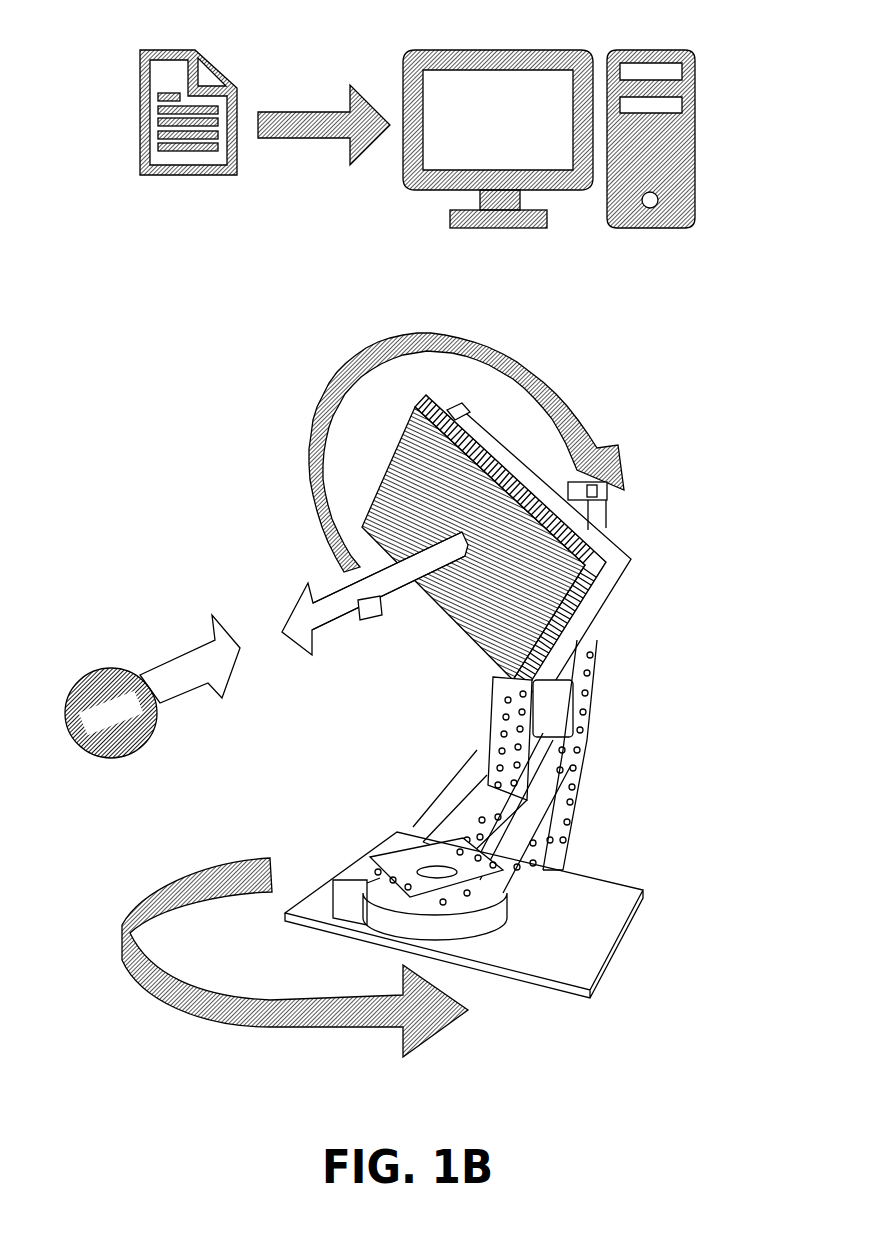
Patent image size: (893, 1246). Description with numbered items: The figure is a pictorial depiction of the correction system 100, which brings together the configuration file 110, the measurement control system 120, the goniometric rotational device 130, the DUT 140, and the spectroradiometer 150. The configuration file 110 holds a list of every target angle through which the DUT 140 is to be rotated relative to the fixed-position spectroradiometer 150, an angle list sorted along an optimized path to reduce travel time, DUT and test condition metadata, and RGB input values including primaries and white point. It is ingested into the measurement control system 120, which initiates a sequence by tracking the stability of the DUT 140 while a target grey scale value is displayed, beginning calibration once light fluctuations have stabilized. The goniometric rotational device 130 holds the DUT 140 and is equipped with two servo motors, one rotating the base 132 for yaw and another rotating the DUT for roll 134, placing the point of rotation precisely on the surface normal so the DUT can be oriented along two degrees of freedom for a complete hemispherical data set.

The correction system 100 is at (261, 330).
The configuration file 110 is at (192, 23).
The measurement control system 120 is at (572, 25).
The goniometric rotational device 130 is at (593, 903).
The base 132 is at (615, 953).
The DUT rotation (roll) 134 is at (623, 545).
The DUT 140 is at (424, 478).
The spectroradiometer 150 is at (93, 724).